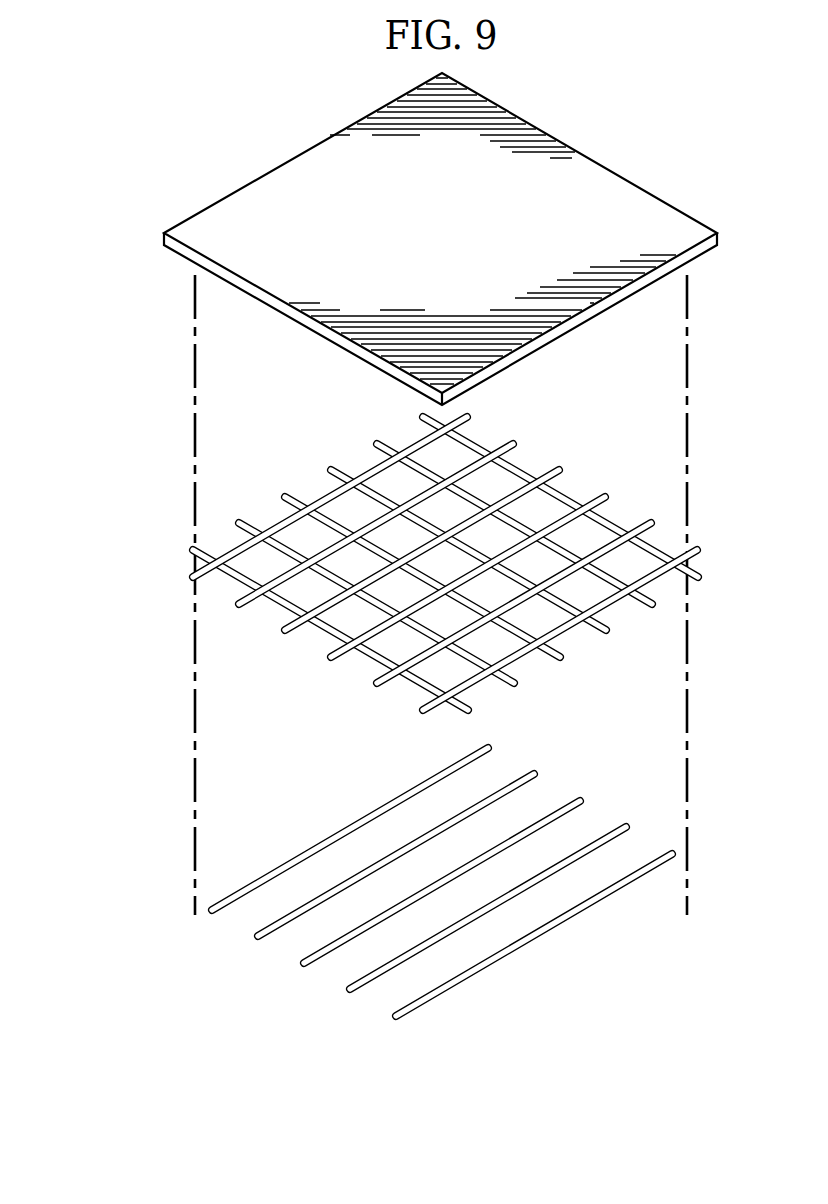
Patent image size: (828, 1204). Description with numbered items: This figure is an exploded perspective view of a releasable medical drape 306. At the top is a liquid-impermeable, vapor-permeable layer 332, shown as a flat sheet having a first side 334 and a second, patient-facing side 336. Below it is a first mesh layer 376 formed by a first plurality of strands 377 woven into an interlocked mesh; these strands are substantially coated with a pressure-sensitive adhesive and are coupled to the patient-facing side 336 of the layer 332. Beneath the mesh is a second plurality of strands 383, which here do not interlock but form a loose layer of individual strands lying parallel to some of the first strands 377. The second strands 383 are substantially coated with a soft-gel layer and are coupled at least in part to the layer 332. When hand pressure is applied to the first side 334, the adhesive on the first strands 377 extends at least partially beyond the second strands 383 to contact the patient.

The releasable medical drape 306 is at (86, 212).
The liquid-impermeable, vapor-permeable layer 332 is at (633, 110).
The first side of the liquid-impermeable, vapor-permeable layer 334 is at (663, 212).
The second, patient-facing side of the liquid-impermeable, vapor-permeable layer 336 is at (641, 290).
The first mesh layer 376 is at (396, 547).
The first plurality of strands 377 is at (189, 570).
The second plurality of strands 383 is at (373, 985).